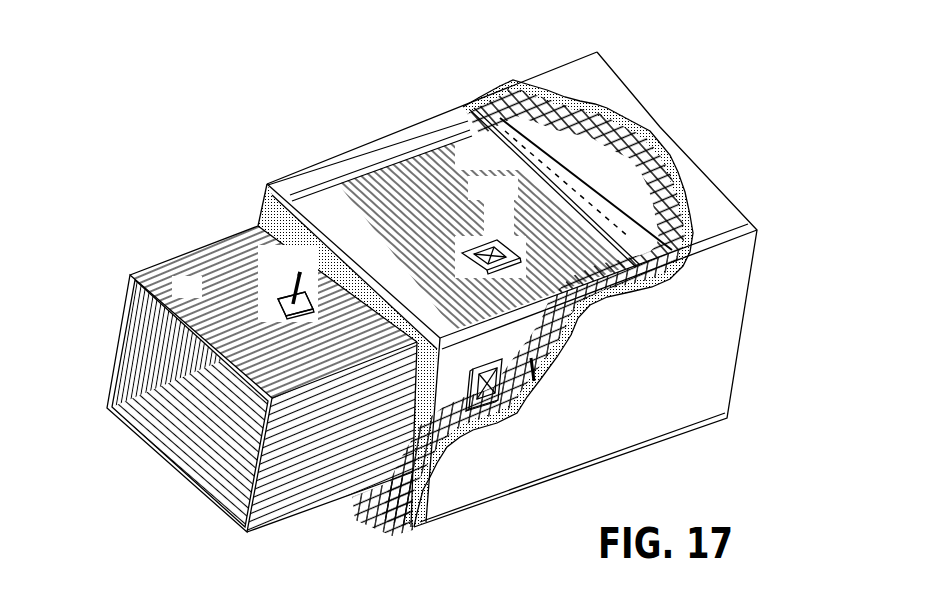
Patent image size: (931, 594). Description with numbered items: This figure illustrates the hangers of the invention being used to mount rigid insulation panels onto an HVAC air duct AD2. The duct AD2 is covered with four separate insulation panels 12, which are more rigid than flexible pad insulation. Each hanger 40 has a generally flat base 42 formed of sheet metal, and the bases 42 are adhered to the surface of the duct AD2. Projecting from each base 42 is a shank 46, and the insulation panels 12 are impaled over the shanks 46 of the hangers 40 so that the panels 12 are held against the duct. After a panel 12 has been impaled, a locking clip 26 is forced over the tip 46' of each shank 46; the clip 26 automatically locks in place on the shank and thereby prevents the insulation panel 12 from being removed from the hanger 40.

The housing 12 is at (330, 190).
The locking clip 26 is at (508, 244).
The hanger 40 is at (268, 311).
The base 42 is at (313, 311).
The shank 46 is at (250, 276).
The tip 46' is at (420, 300).
The air duct AD2 is at (188, 467).